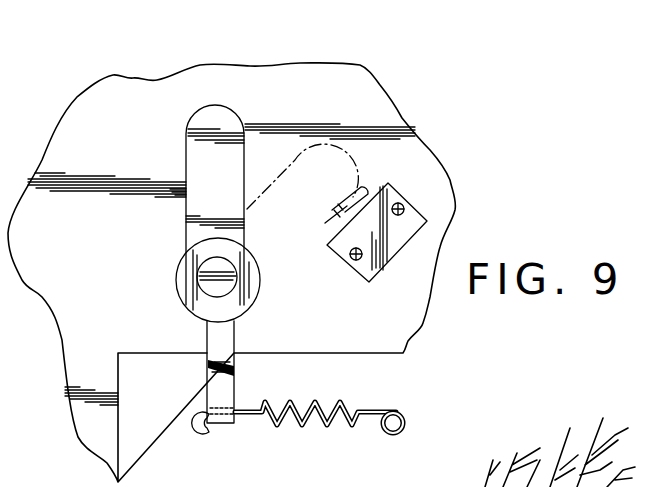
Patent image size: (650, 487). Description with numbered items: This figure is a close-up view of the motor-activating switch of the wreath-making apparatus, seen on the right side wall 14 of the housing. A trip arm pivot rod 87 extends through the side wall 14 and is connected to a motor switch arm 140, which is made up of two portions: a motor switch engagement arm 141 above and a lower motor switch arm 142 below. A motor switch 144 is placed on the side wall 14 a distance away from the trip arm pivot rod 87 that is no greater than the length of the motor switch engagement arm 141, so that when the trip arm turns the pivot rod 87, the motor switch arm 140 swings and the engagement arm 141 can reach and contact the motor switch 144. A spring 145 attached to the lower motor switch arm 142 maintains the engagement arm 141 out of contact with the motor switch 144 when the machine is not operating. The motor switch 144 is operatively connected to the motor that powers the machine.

The side wall 14 is at (163, 92).
The motor switch engagement arm 141 is at (242, 125).
The trip arm pivot rod 87 is at (237, 278).
The motor switch arm 140 is at (168, 270).
The motor switch 144 is at (376, 282).
The lower motor switch arm 142 is at (228, 392).
The spring 145 is at (378, 411).